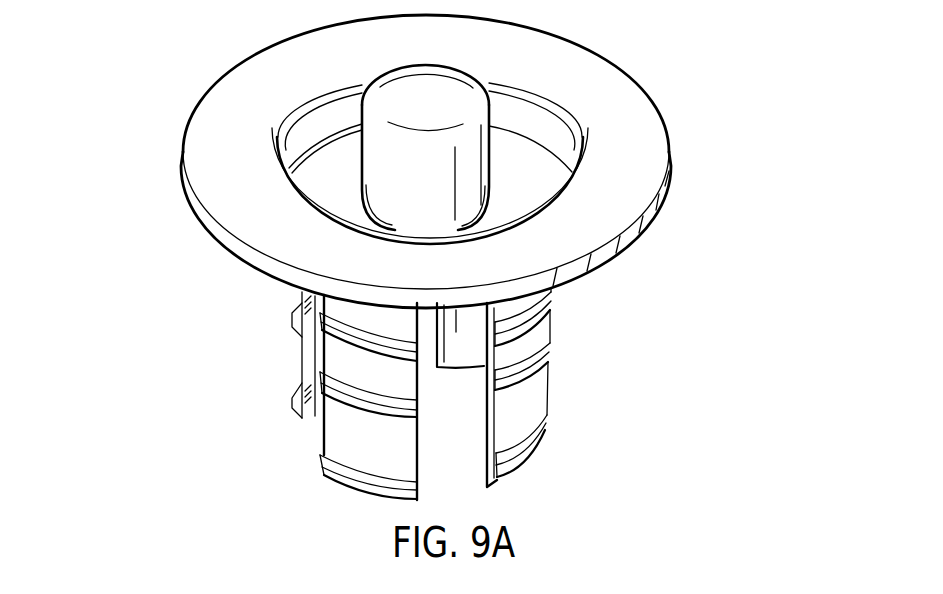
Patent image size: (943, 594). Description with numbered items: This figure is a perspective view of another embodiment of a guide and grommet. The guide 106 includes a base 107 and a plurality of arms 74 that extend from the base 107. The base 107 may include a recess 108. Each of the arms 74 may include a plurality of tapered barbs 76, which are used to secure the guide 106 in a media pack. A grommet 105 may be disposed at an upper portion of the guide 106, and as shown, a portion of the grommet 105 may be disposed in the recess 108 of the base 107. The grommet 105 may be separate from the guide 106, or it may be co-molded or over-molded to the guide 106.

The guide 106 is at (630, 62).
The base 107 is at (182, 142).
The recess 108 is at (340, 153).
The grommet 105 is at (478, 108).
The tapered barbs 76 is at (548, 315).
The arms 74 is at (503, 433).